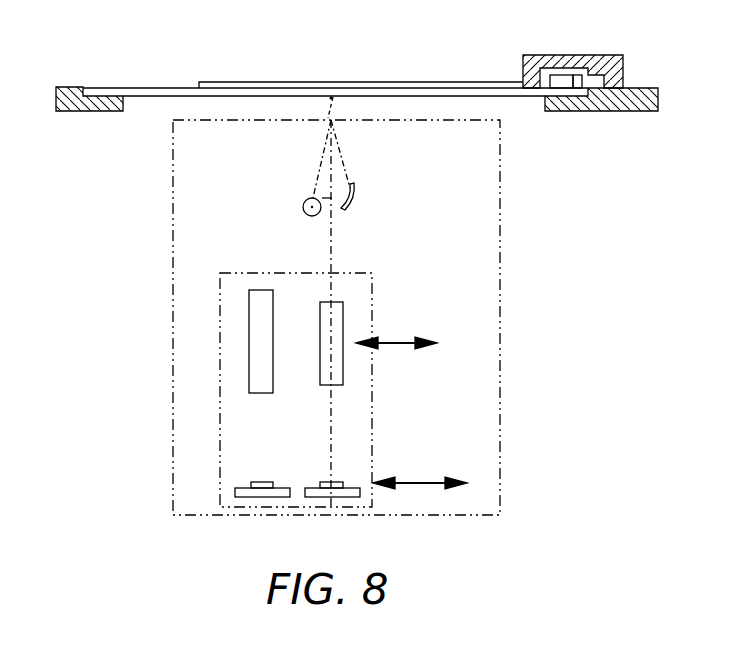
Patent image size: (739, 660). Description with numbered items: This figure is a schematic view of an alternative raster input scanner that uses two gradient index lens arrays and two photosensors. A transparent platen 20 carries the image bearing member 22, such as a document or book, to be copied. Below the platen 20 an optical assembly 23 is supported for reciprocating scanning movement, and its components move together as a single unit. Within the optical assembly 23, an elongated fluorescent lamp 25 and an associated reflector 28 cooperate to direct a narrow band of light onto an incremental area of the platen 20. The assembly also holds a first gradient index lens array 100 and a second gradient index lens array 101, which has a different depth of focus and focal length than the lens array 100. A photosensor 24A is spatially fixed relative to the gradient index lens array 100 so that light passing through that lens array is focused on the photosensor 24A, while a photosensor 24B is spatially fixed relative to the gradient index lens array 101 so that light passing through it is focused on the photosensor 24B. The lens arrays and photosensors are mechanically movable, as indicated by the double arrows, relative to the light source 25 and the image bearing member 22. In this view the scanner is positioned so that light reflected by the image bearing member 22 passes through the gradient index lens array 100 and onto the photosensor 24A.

The transparent platen 20 is at (167, 91).
The image bearing member 22 is at (322, 82).
The optical assembly 23 is at (500, 278).
The fluorescent lamp 25 is at (304, 200).
The reflector 28 is at (347, 207).
The first gradient index lens array 100 is at (343, 375).
The second gradient index lens array 101 is at (249, 376).
The photosensor 24A is at (332, 498).
The photosensor 24B is at (262, 498).